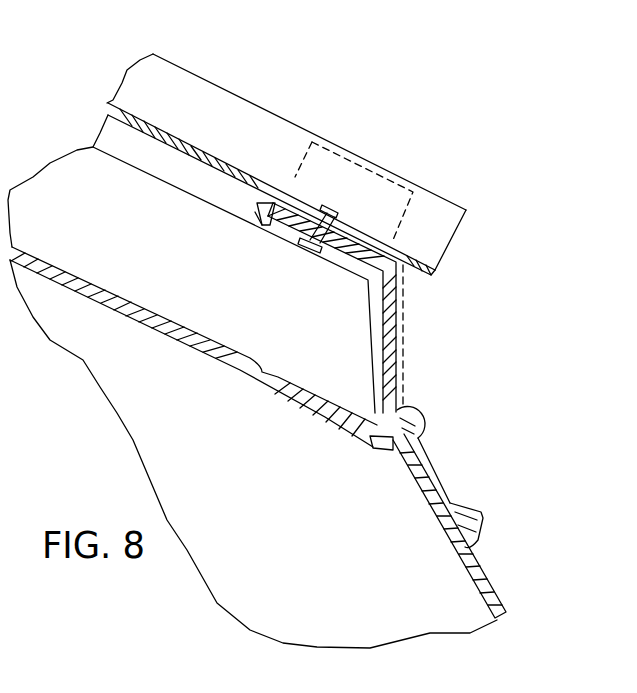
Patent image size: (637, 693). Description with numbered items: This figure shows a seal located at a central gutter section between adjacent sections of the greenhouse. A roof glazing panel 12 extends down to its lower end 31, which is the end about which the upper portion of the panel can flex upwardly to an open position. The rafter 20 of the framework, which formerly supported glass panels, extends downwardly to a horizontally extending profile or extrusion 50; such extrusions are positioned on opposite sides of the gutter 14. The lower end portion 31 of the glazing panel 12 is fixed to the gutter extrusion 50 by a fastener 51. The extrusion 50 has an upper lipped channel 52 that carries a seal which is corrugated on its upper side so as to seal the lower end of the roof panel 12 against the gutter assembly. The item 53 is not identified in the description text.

The glazing panel 12 is at (183, 88).
The lower end 31 is at (235, 92).
The liner strip 53 is at (296, 200).
The fastener 51 is at (323, 200).
The lipped channel 52 is at (270, 198).
The gutter extrusion 50 is at (391, 367).
The rafter 20 is at (190, 271).
The gutter 14 is at (488, 583).